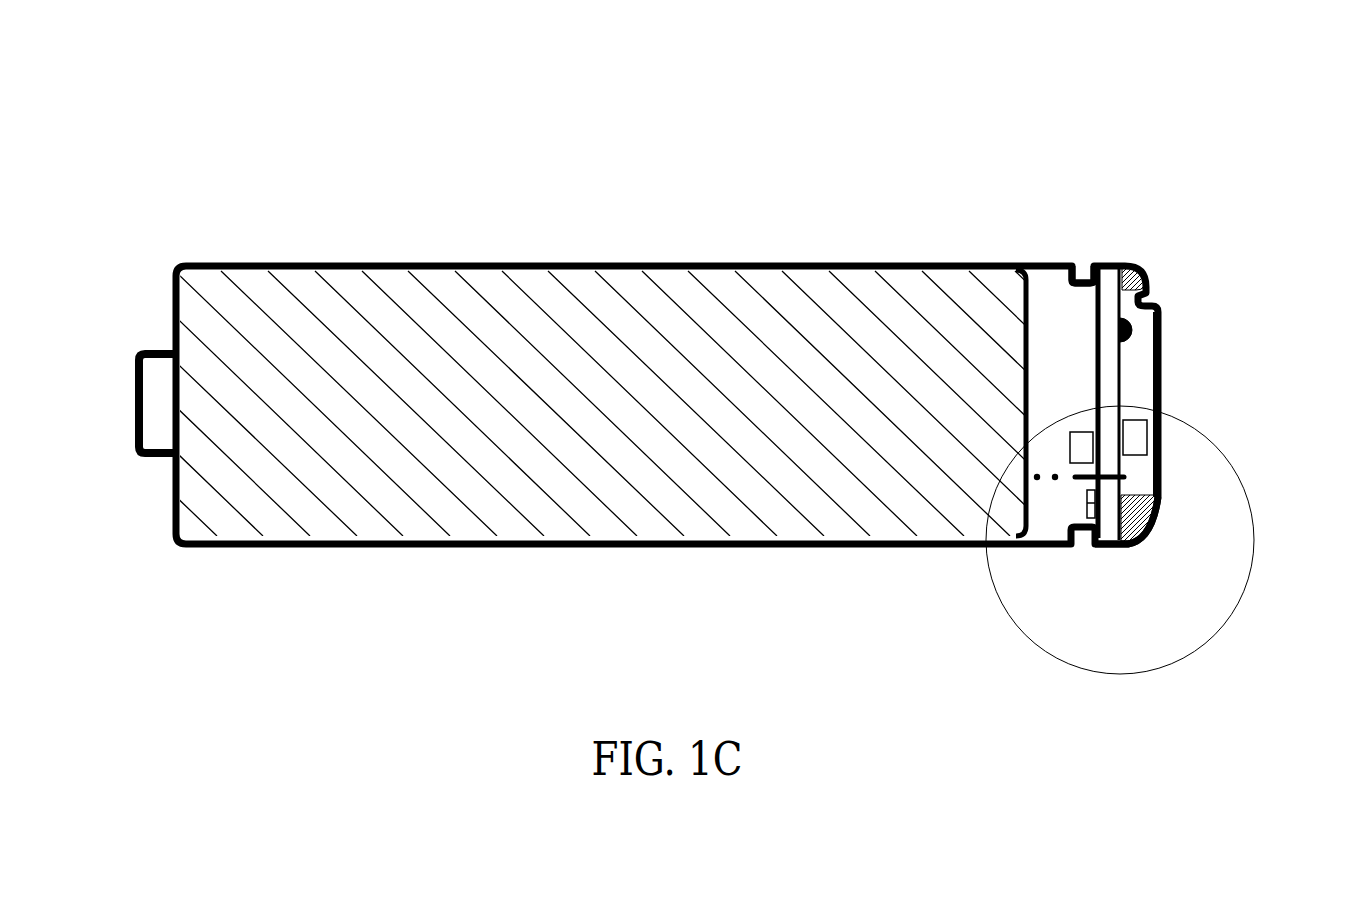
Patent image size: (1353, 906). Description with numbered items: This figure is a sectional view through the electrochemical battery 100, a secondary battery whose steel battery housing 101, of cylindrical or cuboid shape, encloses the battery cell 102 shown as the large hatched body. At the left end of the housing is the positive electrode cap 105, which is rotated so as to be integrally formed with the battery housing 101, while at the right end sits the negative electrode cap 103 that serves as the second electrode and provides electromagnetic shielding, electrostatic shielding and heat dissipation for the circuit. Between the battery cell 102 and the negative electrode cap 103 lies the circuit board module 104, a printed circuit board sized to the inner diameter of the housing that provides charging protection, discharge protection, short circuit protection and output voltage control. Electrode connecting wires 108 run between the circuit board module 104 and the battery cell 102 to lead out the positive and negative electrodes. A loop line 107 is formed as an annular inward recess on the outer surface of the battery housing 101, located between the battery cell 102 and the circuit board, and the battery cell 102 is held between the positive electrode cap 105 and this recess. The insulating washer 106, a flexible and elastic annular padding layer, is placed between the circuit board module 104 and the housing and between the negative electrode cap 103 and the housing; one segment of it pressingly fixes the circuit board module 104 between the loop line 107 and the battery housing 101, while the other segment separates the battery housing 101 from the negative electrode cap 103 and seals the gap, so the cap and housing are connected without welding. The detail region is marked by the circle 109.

The electrochemical battery 100 is at (977, 121).
The battery housing 101 is at (416, 258).
The battery cell 102 is at (492, 443).
The negative electrode cap 103 is at (1163, 347).
The circuit board module 104 is at (1109, 518).
The positive electrode cap 105 is at (135, 392).
The insulating washer 106 is at (1147, 285).
The loop line 107 is at (1083, 280).
The electrode connecting wires 108 is at (1070, 487).
The seal 109 is at (1140, 543).